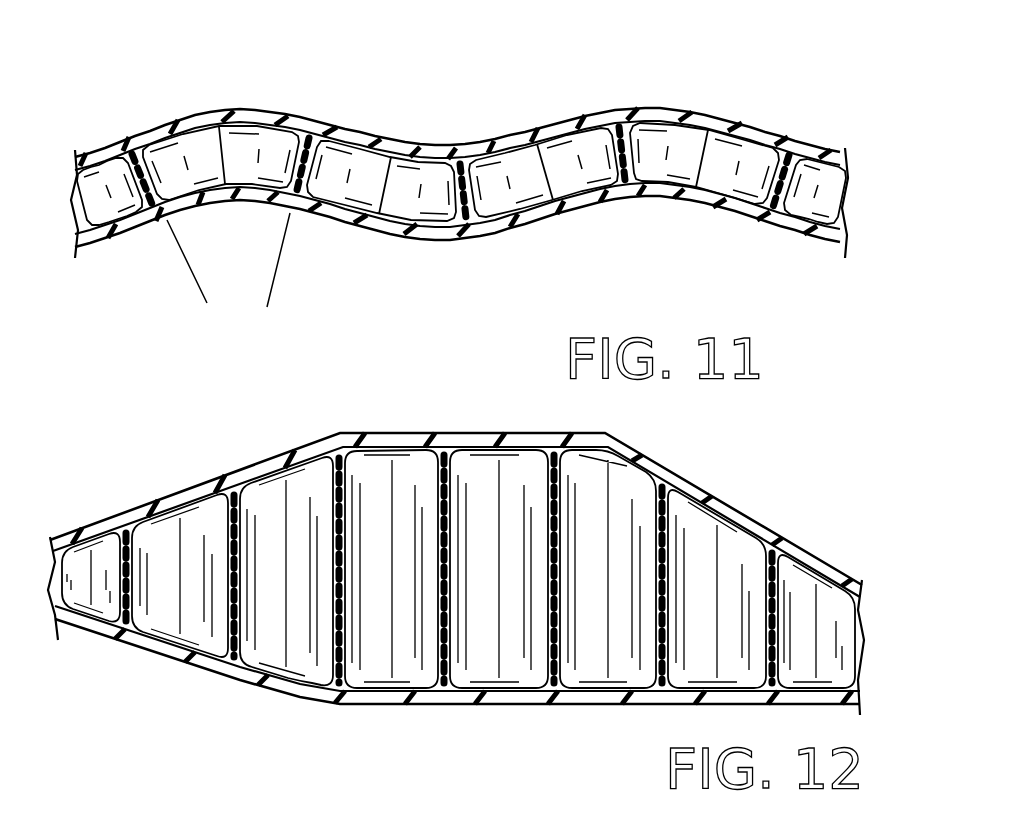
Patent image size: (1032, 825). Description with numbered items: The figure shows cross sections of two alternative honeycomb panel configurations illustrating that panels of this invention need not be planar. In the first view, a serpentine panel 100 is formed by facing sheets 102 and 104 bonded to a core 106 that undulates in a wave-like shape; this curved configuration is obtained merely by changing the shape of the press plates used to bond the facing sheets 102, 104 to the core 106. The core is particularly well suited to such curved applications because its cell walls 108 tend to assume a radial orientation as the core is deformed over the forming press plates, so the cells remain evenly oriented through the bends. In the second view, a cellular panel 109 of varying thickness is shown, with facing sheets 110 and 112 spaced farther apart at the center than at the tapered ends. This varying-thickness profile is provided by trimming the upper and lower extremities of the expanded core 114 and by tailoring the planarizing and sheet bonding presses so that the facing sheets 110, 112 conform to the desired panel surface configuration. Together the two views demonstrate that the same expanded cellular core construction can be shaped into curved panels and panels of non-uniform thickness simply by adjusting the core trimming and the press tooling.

In FIG. 11, the resilient panel 100 is at (459, 174).
In FIG. 11, the facing sheet 102 is at (667, 198).
In FIG. 11, the facing sheet 104 is at (718, 125).
In FIG. 11, the core 106 is at (523, 170).
In FIG. 11, the cell walls 108 is at (313, 158).
In FIG. 12, the cellular panel 109 is at (456, 621).
In FIG. 12, the facing sheet 110 is at (232, 665).
In FIG. 12, the facing sheet 112 is at (236, 493).
In FIG. 12, the expanded core 114 is at (427, 647).